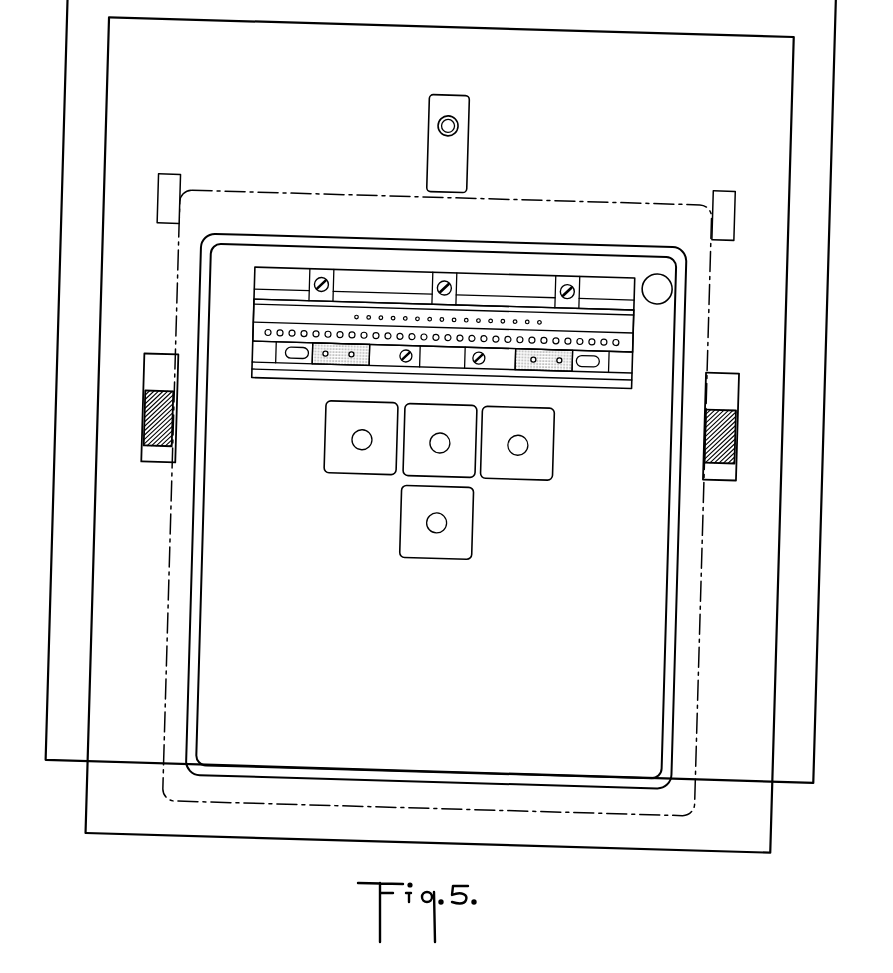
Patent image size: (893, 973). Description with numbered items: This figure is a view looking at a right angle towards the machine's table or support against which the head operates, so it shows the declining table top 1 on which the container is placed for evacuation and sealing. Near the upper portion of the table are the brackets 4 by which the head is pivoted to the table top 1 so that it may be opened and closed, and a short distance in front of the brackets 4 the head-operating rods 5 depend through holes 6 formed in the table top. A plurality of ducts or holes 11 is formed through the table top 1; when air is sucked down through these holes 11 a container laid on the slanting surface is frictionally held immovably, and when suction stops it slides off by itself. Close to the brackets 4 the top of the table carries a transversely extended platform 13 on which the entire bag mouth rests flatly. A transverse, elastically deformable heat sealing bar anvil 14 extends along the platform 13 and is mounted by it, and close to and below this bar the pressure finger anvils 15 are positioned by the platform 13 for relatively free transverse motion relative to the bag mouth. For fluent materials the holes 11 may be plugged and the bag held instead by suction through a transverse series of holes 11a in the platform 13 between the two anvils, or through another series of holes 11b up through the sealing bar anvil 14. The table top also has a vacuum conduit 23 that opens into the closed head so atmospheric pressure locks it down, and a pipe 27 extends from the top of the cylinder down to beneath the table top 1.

The table top 1 is at (756, 626).
The brackets 4 is at (163, 201).
The rods 5 is at (159, 425).
The holes 6 is at (147, 377).
The holes 11 is at (362, 448).
The holes 11a is at (265, 341).
The holes 11b is at (536, 317).
The platform 13 is at (605, 375).
The heat sealing bar anvil 14 is at (607, 320).
The pressure finger anvils 15 is at (334, 353).
The vacuum conduit 23 is at (668, 280).
The pipe 27 is at (451, 125).